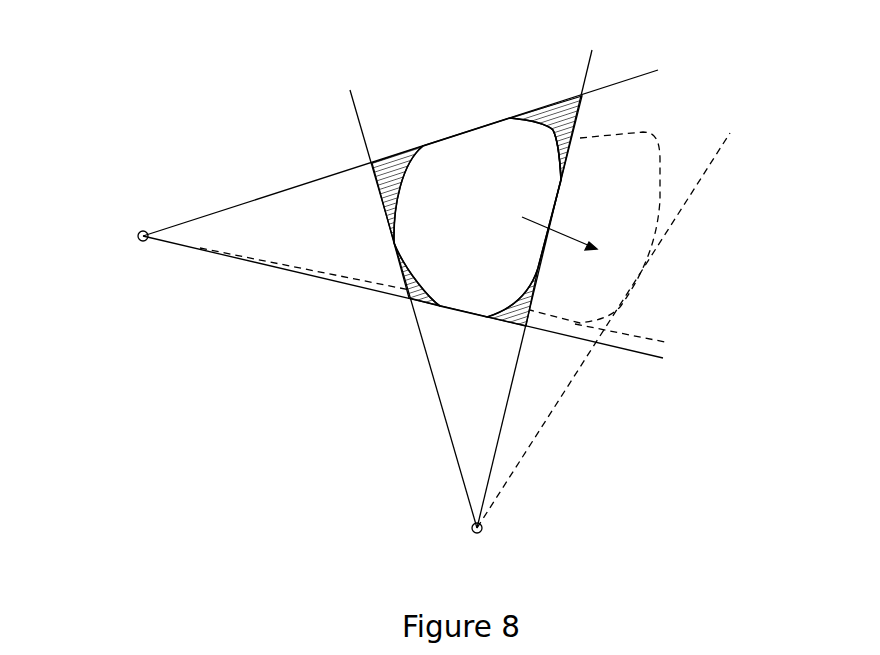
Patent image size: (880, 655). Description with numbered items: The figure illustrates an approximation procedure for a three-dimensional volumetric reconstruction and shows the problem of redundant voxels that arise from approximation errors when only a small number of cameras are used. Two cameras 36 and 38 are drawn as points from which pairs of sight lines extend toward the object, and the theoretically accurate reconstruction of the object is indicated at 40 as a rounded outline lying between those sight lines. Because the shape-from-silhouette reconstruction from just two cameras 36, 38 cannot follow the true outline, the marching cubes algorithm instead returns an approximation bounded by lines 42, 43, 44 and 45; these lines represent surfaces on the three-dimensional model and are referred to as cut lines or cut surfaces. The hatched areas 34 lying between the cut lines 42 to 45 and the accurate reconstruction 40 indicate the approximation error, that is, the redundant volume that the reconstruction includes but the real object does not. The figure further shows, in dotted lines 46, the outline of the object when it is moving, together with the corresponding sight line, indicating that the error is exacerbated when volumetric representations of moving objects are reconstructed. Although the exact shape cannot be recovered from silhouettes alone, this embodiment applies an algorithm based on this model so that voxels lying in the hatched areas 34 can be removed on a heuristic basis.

The hatched areas 34 is at (395, 168).
The camera 36 is at (484, 532).
The camera 38 is at (137, 238).
The theoretically accurate reconstruction 40 is at (477, 178).
The cut line 42 is at (383, 210).
The cut line 43 is at (573, 155).
The cut line 44 is at (527, 113).
The cut line 45 is at (490, 317).
The dotted lines 46 is at (665, 183).